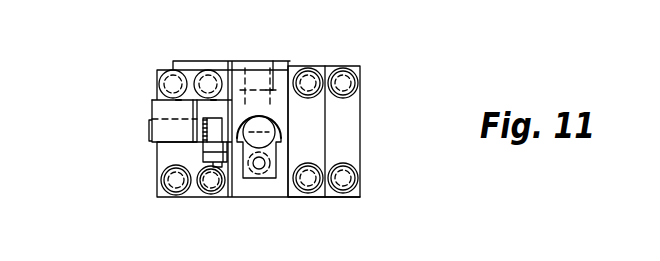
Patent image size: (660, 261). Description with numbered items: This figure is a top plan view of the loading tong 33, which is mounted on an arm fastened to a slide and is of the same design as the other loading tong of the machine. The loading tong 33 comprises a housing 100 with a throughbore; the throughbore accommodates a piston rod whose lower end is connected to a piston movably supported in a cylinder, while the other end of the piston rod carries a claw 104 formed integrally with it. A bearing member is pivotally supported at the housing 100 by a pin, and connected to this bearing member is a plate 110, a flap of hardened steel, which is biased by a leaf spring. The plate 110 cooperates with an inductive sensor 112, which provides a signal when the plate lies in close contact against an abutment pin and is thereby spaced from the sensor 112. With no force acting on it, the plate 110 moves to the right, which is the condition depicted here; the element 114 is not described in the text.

The housing 100 is at (286, 61).
The loading tong 33 is at (308, 64).
The claw 104 is at (280, 152).
The plate 110 is at (203, 152).
The sensor 112 is at (203, 118).
The guide rollers 114 is at (358, 165).